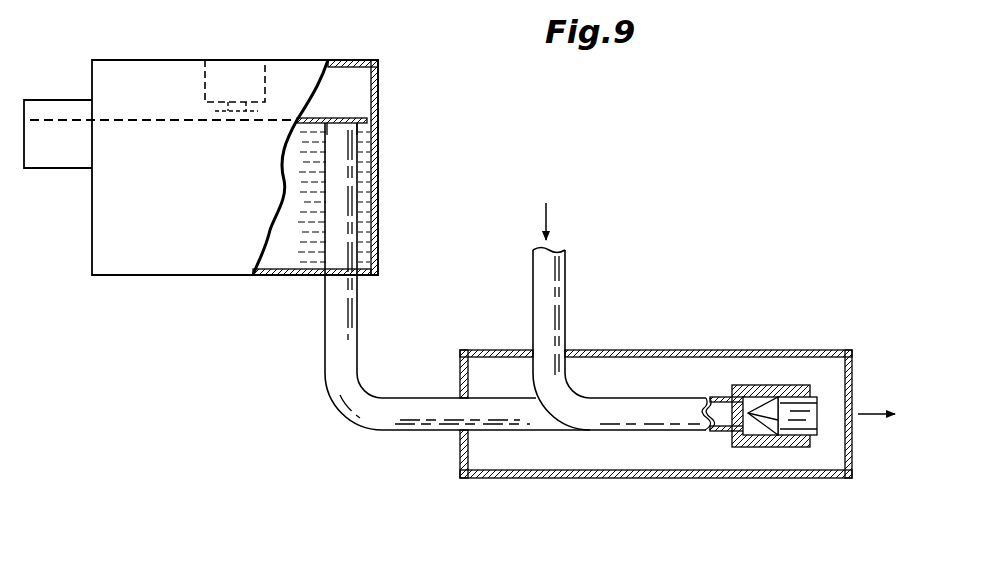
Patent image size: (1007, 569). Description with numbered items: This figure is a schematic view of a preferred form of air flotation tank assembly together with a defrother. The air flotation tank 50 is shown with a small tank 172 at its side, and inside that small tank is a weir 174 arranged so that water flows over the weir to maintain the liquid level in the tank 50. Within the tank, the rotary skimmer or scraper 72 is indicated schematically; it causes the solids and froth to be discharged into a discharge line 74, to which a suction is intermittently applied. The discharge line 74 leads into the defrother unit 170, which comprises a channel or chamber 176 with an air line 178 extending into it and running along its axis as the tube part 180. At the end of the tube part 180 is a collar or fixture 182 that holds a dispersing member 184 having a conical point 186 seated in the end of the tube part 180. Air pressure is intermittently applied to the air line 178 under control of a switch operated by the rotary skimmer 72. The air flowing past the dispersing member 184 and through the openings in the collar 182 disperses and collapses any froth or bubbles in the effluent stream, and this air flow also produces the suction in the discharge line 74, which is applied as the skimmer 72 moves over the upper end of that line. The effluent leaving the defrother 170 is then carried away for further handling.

The air flotation tank 50 is at (392, 150).
The rotary skimmer 72 is at (318, 120).
The discharge line 74 is at (330, 313).
The defrother unit 170 is at (677, 402).
The small tank 172 is at (53, 160).
The weir 174 is at (43, 118).
The channel or chamber 176 is at (528, 478).
The air line 178 is at (555, 285).
The tube part 180 is at (670, 390).
The collar or fixture 182 is at (750, 385).
The dispersing member 184 is at (805, 405).
The conical point 186 is at (755, 415).